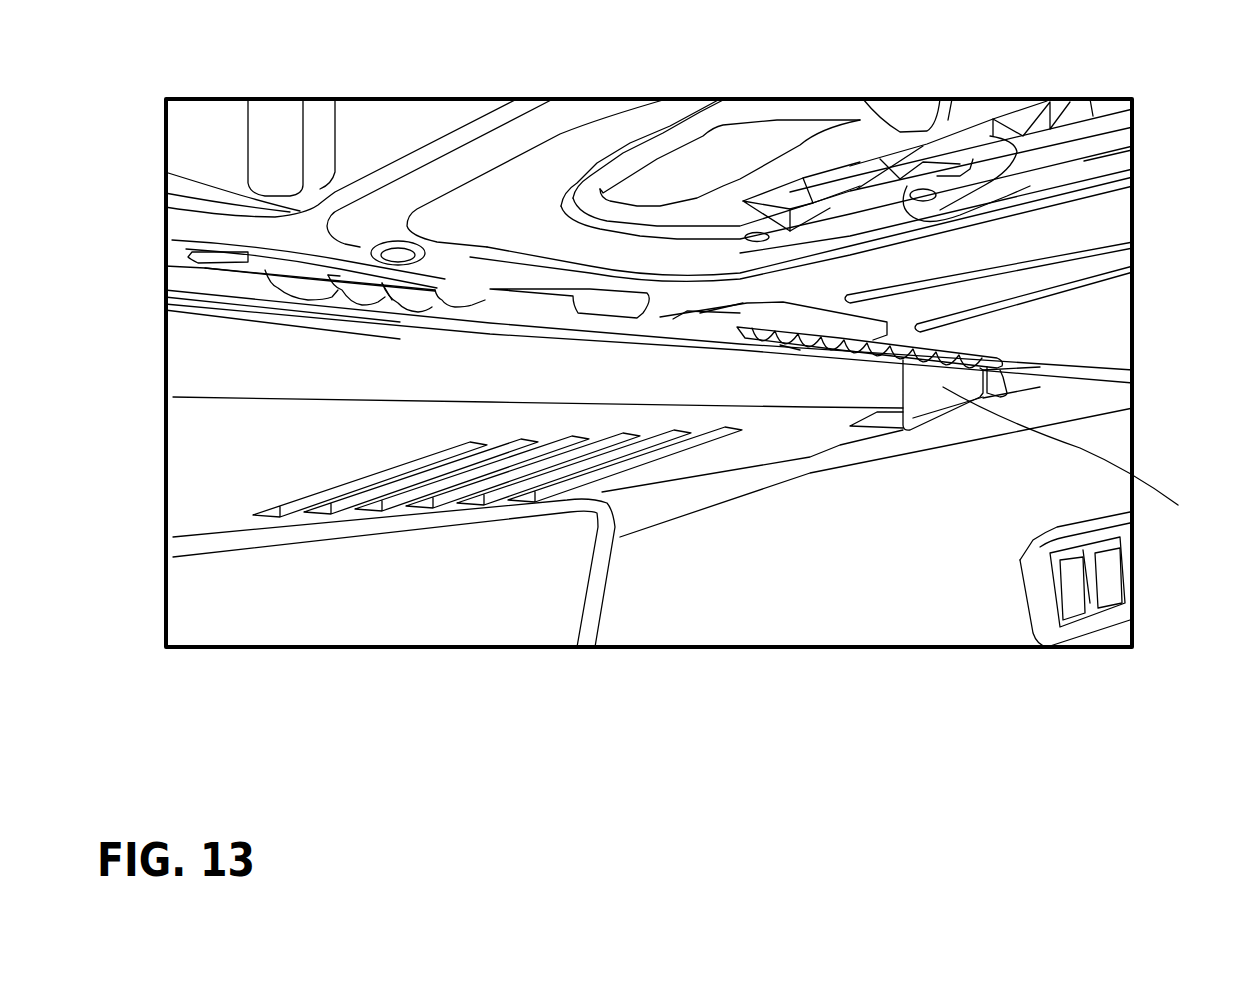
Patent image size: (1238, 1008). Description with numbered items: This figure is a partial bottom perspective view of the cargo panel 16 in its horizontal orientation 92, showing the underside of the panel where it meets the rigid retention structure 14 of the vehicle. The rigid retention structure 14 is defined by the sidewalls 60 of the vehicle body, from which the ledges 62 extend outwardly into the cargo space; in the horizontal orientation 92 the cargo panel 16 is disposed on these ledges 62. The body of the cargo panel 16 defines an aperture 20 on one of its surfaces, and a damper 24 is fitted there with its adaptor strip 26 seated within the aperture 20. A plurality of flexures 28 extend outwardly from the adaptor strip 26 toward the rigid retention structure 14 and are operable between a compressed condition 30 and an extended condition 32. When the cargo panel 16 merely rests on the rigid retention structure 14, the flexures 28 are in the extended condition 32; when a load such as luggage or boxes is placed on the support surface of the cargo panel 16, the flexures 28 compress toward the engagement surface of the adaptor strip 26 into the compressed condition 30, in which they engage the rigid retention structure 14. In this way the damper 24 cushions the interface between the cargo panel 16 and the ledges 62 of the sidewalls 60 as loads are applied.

The rigid retention structure 14 is at (823, 383).
The cargo panel 16 is at (1084, 161).
The aperture 20 is at (217, 270).
The damper 24 is at (315, 307).
The adaptor strip 26 is at (213, 255).
The flexures 28 is at (338, 287).
The compressed condition 30 is at (1012, 385).
The extended condition 32 is at (390, 302).
The sidewalls 60 is at (973, 550).
The ledges 62 is at (1072, 461).
The horizontal orientation 92 is at (370, 163).